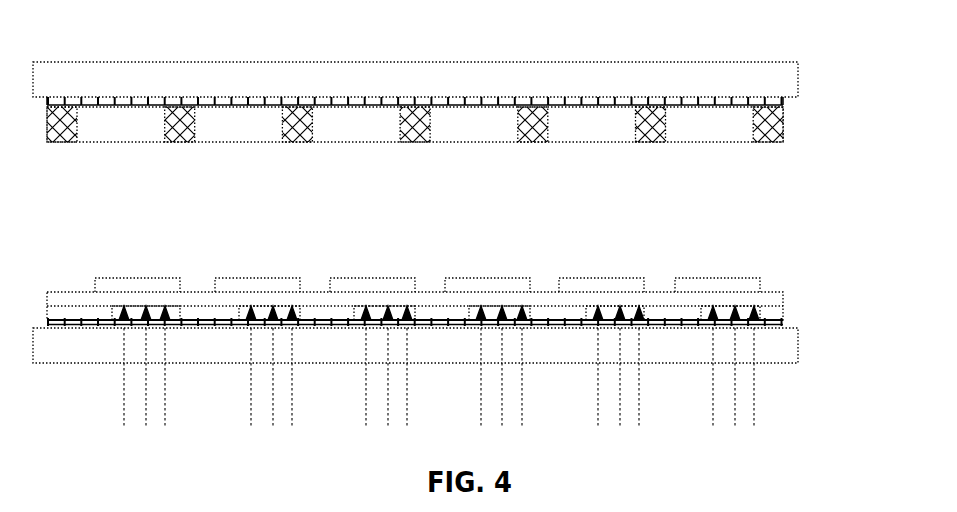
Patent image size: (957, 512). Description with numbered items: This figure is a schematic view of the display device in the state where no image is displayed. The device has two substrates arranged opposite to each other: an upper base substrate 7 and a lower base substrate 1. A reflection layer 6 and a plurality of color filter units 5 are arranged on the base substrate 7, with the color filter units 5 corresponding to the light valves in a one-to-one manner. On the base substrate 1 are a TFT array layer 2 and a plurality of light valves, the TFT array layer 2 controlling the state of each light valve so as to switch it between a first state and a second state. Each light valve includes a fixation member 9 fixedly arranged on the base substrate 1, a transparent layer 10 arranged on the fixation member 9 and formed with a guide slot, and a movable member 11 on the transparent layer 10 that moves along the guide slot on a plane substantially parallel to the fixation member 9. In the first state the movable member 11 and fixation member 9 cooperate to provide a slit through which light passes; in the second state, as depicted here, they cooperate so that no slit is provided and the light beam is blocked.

The base substrate 1 is at (798, 345).
The TFT array layer 2 is at (785, 318).
The color filter units 5 is at (783, 125).
The reflection layer 6 is at (783, 100).
The base substrate 7 is at (768, 70).
The fixation member 9 is at (673, 303).
The transparent layer 10 is at (785, 298).
The movable member 11 is at (720, 278).